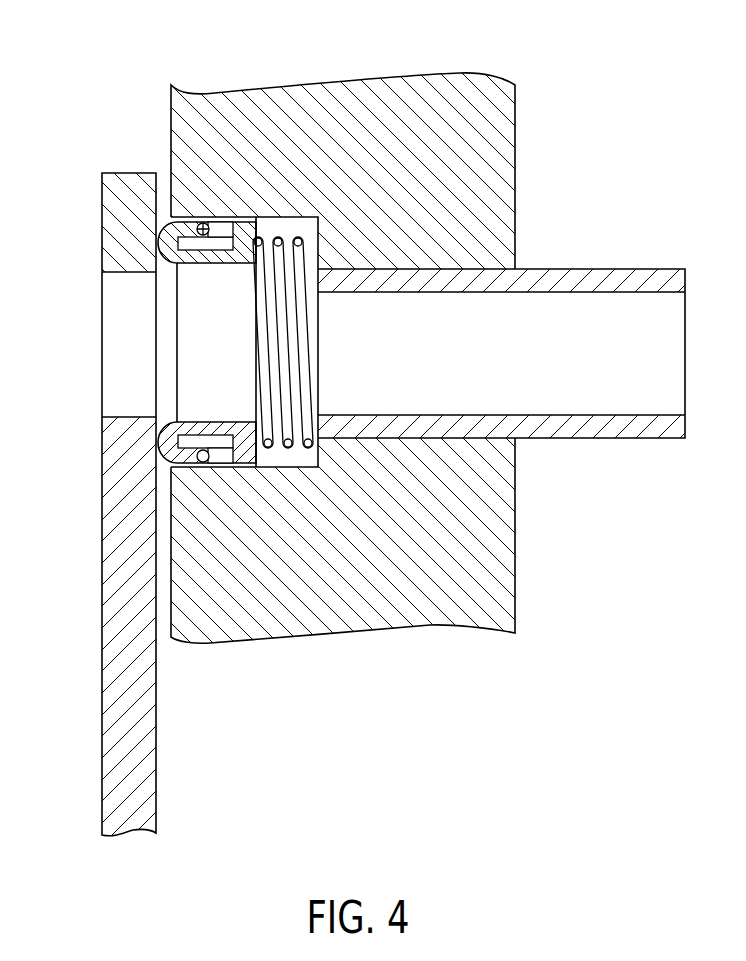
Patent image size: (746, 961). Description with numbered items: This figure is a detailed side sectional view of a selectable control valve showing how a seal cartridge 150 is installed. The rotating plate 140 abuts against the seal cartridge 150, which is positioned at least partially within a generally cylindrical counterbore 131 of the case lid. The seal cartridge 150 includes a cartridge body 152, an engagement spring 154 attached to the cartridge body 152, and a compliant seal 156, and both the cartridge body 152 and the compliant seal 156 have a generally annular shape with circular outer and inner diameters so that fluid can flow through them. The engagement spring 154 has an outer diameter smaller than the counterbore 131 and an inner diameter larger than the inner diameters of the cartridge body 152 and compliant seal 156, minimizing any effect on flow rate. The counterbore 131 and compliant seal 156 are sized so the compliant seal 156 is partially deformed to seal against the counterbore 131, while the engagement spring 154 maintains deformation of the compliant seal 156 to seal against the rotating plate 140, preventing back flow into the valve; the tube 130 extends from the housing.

The tube 130 is at (574, 440).
The counterbore 131 is at (291, 207).
The rotating plate 140 is at (102, 207).
The seal cartridge 150 is at (195, 212).
The cartridge body 152 is at (240, 217).
The engagement spring 154 is at (305, 262).
The compliant seal 156 is at (165, 233).